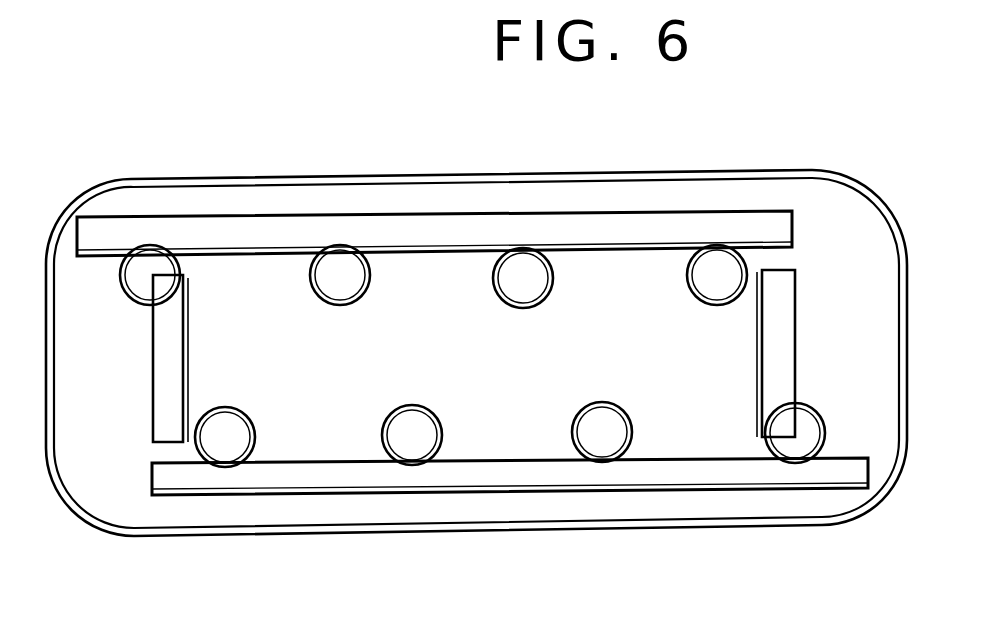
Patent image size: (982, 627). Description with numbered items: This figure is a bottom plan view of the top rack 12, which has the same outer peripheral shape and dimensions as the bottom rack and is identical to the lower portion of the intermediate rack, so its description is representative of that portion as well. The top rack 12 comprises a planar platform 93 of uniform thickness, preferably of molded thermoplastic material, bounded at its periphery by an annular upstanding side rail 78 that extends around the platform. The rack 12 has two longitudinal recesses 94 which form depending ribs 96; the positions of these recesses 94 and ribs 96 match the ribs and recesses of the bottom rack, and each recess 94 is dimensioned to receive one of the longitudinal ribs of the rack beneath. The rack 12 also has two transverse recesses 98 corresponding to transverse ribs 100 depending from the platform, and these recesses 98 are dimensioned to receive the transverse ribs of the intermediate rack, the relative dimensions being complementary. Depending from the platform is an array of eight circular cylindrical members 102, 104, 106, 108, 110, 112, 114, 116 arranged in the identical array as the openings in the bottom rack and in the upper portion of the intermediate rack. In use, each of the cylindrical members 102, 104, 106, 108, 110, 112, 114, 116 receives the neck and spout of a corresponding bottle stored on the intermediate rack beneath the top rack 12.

The top rack 12 is at (440, 552).
The side rail 78 is at (257, 536).
The planar platform 93 is at (452, 367).
The longitudinal recesses 94 is at (466, 235).
The depending ribs 96 is at (700, 228).
The transverse recesses 98 is at (178, 389).
The ribs 100 is at (178, 340).
The circular cylindrical member 102 is at (154, 262).
The circular cylindrical member 104 is at (251, 428).
The circular cylindrical member 106 is at (371, 286).
The circular cylindrical member 108 is at (440, 418).
The circular cylindrical member 110 is at (545, 300).
The circular cylindrical member 112 is at (578, 410).
The circular cylindrical member 114 is at (690, 280).
The circular cylindrical member 116 is at (814, 405).